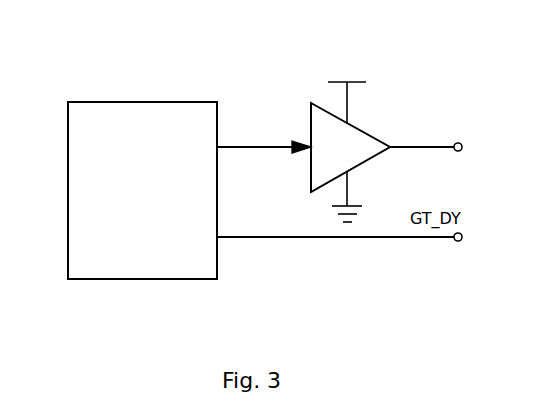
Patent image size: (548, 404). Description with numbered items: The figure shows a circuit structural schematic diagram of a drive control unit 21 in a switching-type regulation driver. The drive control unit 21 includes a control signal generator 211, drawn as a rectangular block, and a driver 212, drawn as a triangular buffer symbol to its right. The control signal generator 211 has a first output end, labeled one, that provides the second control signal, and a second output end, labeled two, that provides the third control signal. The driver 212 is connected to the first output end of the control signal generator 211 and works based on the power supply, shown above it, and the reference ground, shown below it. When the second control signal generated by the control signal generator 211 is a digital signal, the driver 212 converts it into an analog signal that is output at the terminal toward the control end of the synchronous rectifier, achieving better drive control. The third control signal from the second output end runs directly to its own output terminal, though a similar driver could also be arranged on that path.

The drive control unit 21 is at (73, 323).
The control signal generator 211 is at (98, 143).
The driver 212 is at (323, 125).